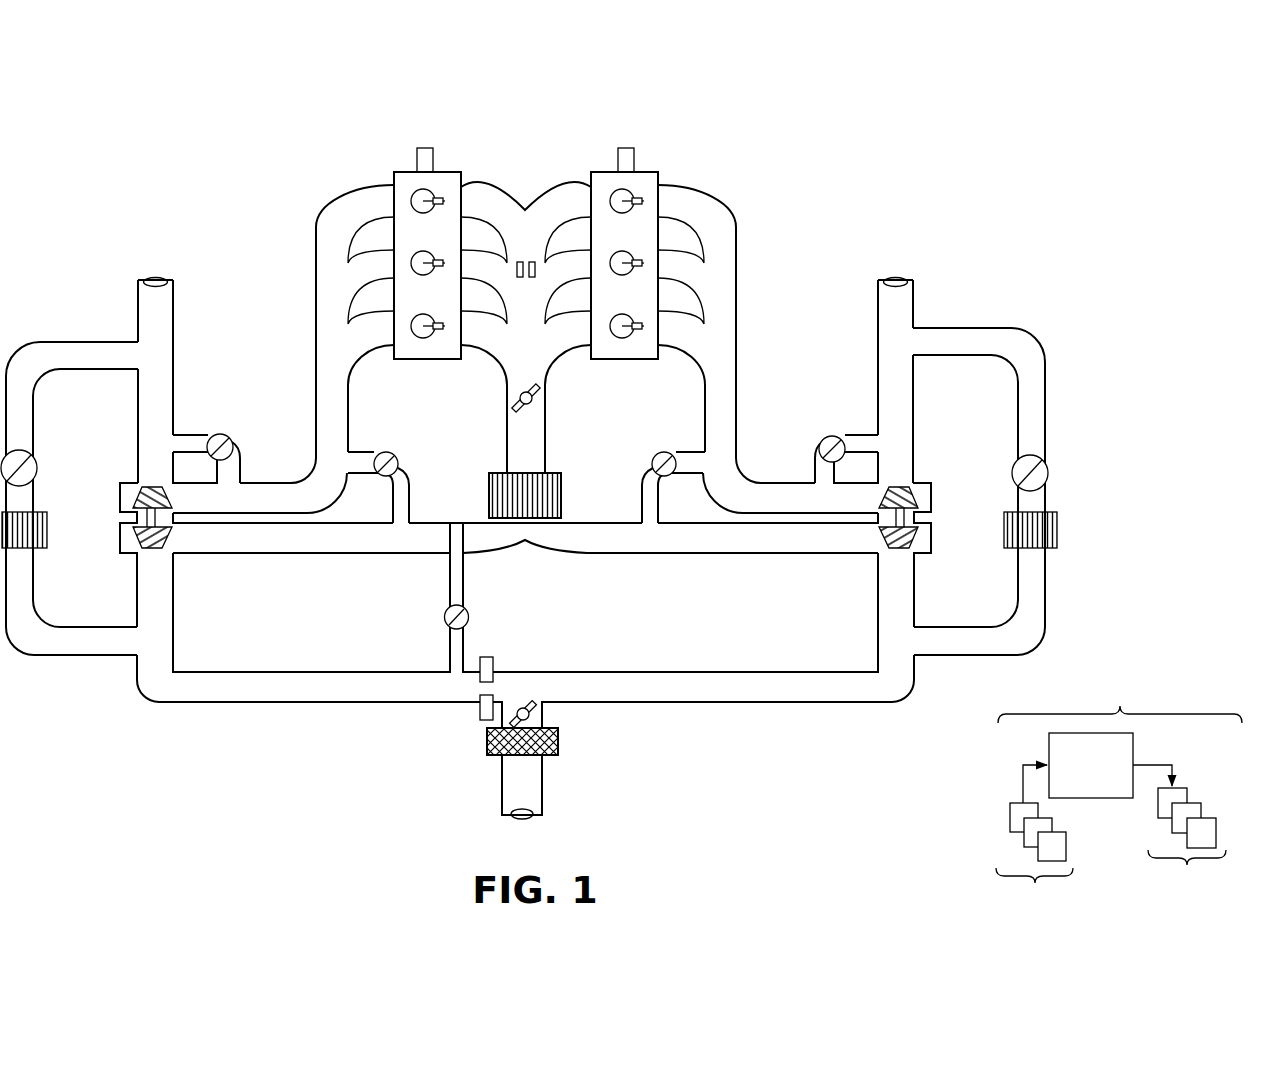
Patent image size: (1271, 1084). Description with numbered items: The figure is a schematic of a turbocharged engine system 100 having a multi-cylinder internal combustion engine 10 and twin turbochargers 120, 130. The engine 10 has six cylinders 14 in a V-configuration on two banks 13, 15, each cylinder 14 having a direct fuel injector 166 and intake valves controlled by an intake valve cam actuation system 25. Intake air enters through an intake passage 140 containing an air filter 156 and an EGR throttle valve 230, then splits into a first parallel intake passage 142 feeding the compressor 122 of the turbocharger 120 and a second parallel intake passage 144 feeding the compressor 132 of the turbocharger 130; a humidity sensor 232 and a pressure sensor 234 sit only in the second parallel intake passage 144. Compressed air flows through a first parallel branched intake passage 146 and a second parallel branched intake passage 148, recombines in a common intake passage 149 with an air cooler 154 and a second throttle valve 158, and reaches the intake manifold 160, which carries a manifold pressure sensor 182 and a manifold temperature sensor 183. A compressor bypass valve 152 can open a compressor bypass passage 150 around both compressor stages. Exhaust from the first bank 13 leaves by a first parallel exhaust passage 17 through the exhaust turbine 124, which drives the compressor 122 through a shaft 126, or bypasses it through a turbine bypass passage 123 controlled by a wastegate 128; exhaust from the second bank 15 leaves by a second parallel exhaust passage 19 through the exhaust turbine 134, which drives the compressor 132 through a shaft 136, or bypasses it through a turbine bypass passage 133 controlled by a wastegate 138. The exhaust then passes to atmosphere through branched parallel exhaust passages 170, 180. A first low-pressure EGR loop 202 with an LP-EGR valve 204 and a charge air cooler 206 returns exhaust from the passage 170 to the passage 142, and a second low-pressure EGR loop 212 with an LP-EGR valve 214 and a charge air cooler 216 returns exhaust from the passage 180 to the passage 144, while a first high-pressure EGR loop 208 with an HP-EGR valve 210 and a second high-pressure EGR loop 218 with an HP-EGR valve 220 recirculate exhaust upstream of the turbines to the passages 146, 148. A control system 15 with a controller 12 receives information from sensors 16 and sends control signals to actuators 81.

The internal combustion engine 10 is at (880, 177).
The turbocharged engine system 100 is at (1152, 173).
The controller 12 is at (1097, 768).
The first bank 13 is at (651, 172).
The cylinder 14 is at (620, 252).
The second bank / control system 15 is at (401, 172).
The sensors 16 is at (1034, 864).
The first parallel exhaust passage 17 is at (737, 418).
The second parallel exhaust passage 19 is at (316, 410).
The intake valve cam actuation system 25 is at (428, 148).
The actuators 81 is at (1187, 847).
The first turbocharger 120 is at (893, 476).
The compressor 122 is at (897, 553).
The turbine bypass passage 123 is at (866, 435).
The exhaust turbine 124 is at (908, 490).
The shaft 126 is at (908, 522).
The wastegate 128 is at (820, 442).
The second turbocharger 130 is at (152, 475).
The compressor 132 is at (162, 553).
The turbine bypass passage 133 is at (190, 435).
The exhaust turbine 134 is at (133, 490).
The shaft 136 is at (135, 530).
The wastegate 138 is at (233, 440).
The intake passage 140 is at (502, 775).
The first parallel intake passage 142 is at (700, 672).
The second parallel intake passage 144 is at (300, 672).
The first parallel branched intake passage 146 is at (688, 556).
The second parallel branched intake passage 148 is at (272, 556).
The common intake passage 149 is at (545, 413).
The compressor bypass passage 150 is at (466, 580).
The compressor bypass valve 152 is at (468, 616).
The air cooler 154 is at (562, 498).
The air filter 156 is at (560, 745).
The second air intake throttle valve 158 is at (524, 392).
The intake manifold 160 is at (523, 186).
The fuel injector 166 is at (636, 260).
The branched parallel exhaust passage 170 is at (878, 320).
The branched parallel exhaust passage 180 is at (173, 320).
The intake manifold pressure sensor 182 is at (518, 277).
The intake manifold temperature sensor 183 is at (534, 277).
The first low-pressure EGR loop 202 is at (1045, 400).
The LP-EGR valve 204 is at (1046, 462).
The charge air cooler 206 is at (1054, 506).
The first high-pressure EGR loop 208 is at (652, 464).
The HP-EGR valve 210 is at (661, 452).
The second low-pressure EGR loop 212 is at (45, 342).
The LP-EGR valve 214 is at (29, 456).
The charge air cooler 216 is at (14, 552).
The second high-pressure EGR loop 218 is at (410, 483).
The HP-EGR valve 220 is at (388, 452).
The EGR throttle valve 230 is at (536, 702).
The humidity sensor 232 is at (493, 658).
The pressure sensor 234 is at (481, 719).